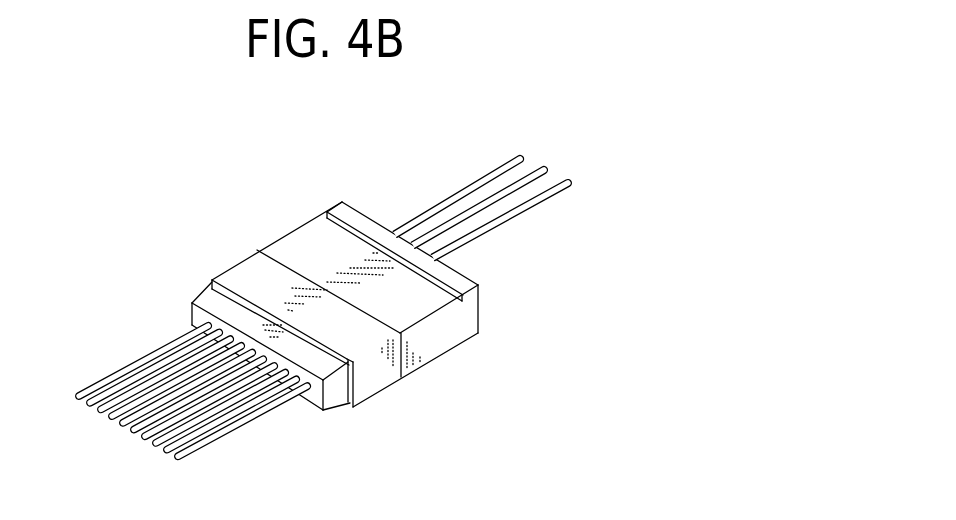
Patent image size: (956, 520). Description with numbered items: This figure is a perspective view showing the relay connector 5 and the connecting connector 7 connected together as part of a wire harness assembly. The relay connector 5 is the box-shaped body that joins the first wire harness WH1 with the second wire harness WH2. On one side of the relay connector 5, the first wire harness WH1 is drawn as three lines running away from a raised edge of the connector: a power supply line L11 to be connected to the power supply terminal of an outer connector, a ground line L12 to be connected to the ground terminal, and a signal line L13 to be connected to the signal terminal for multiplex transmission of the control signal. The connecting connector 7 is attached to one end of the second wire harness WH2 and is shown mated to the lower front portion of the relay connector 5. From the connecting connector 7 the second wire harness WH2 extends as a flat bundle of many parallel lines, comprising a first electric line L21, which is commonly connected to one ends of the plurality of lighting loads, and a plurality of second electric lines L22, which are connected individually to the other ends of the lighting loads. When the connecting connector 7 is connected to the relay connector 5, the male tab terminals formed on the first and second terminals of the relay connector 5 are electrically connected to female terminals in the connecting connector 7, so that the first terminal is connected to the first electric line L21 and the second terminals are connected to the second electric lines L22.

The relay connector 5 is at (305, 245).
The connecting connector 7 is at (247, 277).
The first wire harness WH1 is at (536, 168).
The power supply line L11 is at (571, 183).
The ground line L12 is at (542, 174).
The signal line L13 is at (520, 157).
The second wire harness WH2 is at (178, 411).
The first electric line L21 is at (243, 441).
The second electric line L22 is at (140, 374).